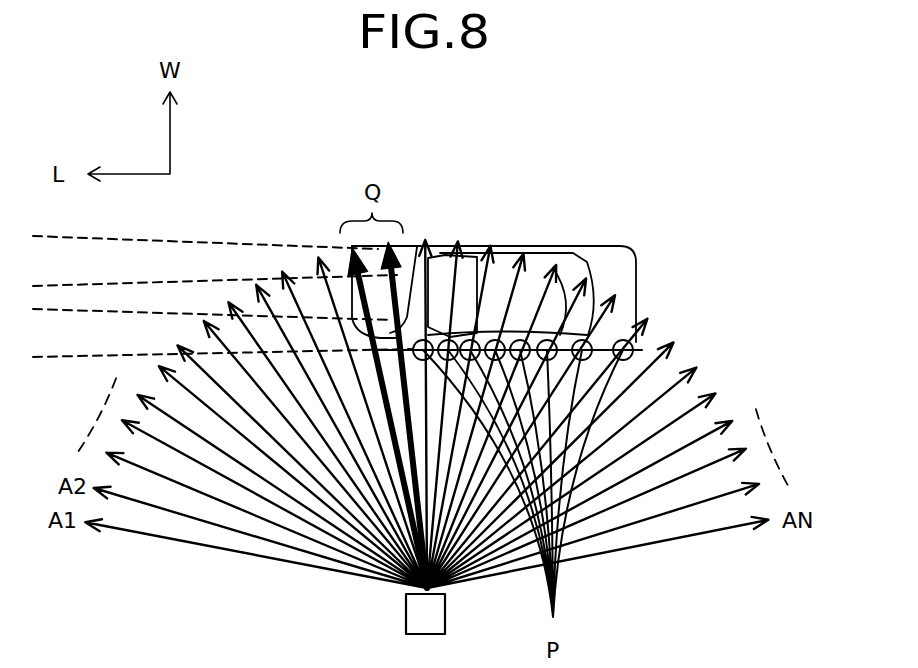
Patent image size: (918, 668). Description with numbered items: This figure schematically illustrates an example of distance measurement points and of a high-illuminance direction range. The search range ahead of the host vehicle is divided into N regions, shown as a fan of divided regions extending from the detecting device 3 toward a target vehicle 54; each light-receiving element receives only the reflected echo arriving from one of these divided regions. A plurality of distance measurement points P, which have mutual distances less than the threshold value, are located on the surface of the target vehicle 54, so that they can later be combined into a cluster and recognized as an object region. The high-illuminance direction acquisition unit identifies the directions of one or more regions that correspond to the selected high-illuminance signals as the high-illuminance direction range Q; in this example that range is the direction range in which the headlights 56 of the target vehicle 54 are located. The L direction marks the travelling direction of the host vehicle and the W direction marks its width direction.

The radar sensor 3 is at (416, 615).
The target vehicle 54 is at (604, 258).
The headlights 56 is at (367, 250).